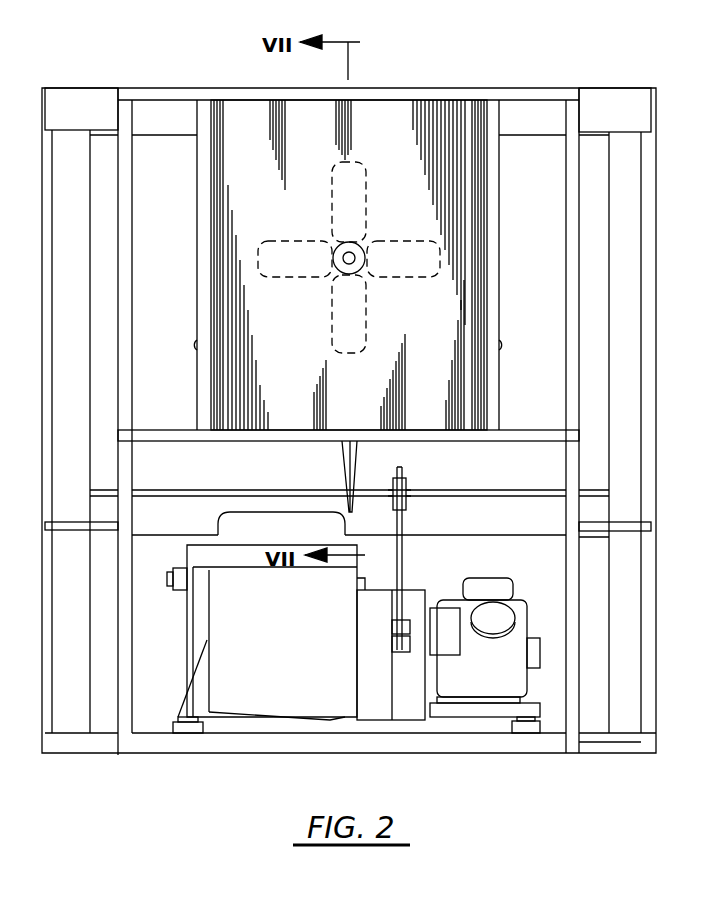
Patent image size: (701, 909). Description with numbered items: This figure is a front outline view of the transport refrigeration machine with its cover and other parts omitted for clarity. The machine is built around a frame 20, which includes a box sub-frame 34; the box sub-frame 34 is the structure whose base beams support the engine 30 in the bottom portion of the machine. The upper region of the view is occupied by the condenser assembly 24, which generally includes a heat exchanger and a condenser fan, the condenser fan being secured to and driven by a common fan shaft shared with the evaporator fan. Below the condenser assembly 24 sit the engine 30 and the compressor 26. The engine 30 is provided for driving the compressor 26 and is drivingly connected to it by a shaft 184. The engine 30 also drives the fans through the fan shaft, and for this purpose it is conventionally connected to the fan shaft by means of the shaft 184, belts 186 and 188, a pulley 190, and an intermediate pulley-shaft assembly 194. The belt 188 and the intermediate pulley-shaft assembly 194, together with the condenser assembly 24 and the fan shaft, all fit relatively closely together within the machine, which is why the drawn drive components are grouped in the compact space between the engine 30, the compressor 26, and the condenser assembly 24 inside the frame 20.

The frame 20 is at (77, 68).
The condenser assembly 24 is at (456, 92).
The box sub-frame 34 is at (604, 76).
The belt 188 is at (345, 480).
The intermediate pulley-shaft assembly 194 is at (410, 483).
The belt 186 is at (403, 568).
The pulley 190 is at (395, 630).
The shaft 184 is at (395, 650).
The engine 30 is at (296, 622).
The compressor 26 is at (485, 655).